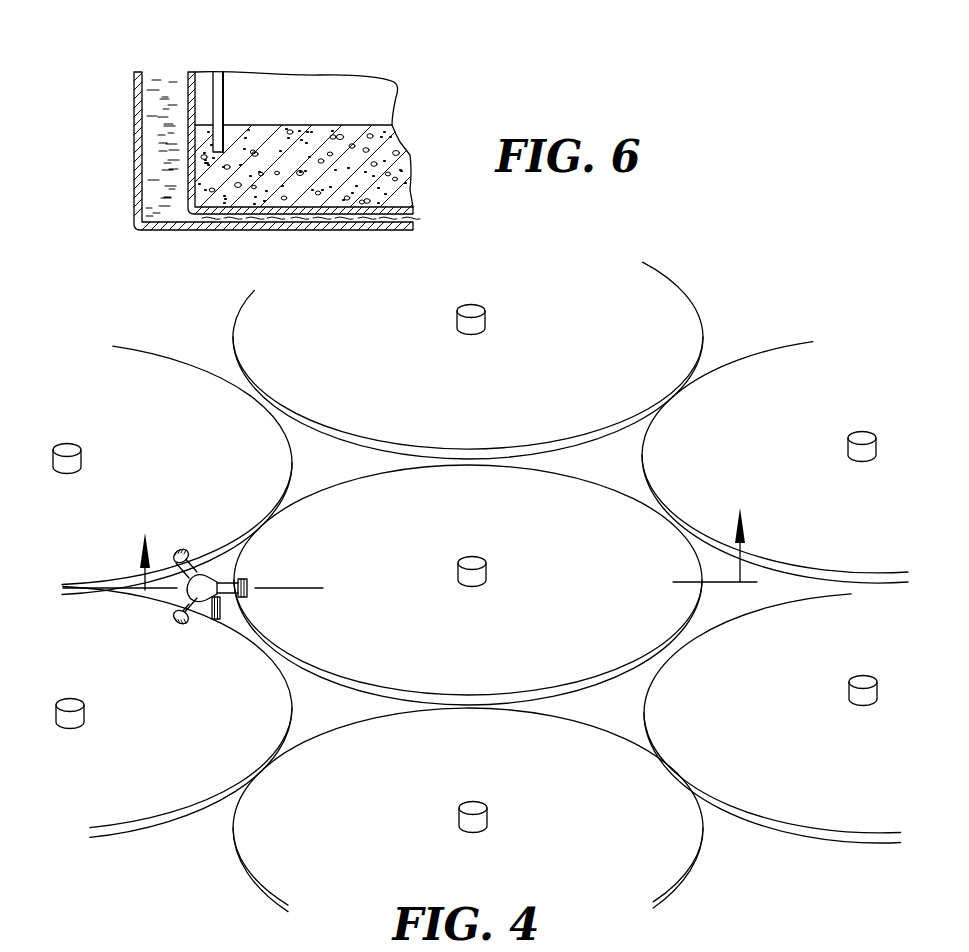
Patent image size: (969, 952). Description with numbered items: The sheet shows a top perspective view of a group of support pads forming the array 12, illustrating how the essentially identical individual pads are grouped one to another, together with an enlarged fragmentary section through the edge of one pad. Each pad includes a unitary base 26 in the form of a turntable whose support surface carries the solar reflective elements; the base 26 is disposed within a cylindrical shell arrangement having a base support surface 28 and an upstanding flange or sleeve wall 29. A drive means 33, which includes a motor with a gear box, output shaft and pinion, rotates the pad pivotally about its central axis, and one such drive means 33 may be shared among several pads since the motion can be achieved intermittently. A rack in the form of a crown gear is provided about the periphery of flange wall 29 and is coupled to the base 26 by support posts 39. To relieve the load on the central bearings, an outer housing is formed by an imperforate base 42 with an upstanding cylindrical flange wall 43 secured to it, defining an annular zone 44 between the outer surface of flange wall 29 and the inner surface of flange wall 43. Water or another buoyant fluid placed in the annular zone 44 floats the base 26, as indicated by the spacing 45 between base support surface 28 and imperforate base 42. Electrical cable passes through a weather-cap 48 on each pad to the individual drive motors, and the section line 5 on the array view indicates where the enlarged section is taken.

In FIG. 4, the array 12 is at (772, 315).
In FIG. 4, the weather-cap 48 is at (486, 318).
In FIG. 4, the drive means 33 is at (204, 566).
In FIG. 4, the section line 5- 5 is at (410, 526).
In FIG. 6, the base 26 is at (316, 135).
In FIG. 6, the base support surface 28 is at (240, 212).
In FIG. 6, the flange wall 29 is at (193, 72).
In FIG. 6, the support posts 39 is at (223, 97).
In FIG. 6, the imperforate base 42 is at (383, 226).
In FIG. 6, the cylindrical flange wall 43 is at (133, 103).
In FIG. 6, the annular zone 44 is at (152, 152).
In FIG. 6, the spacing 45 is at (412, 212).